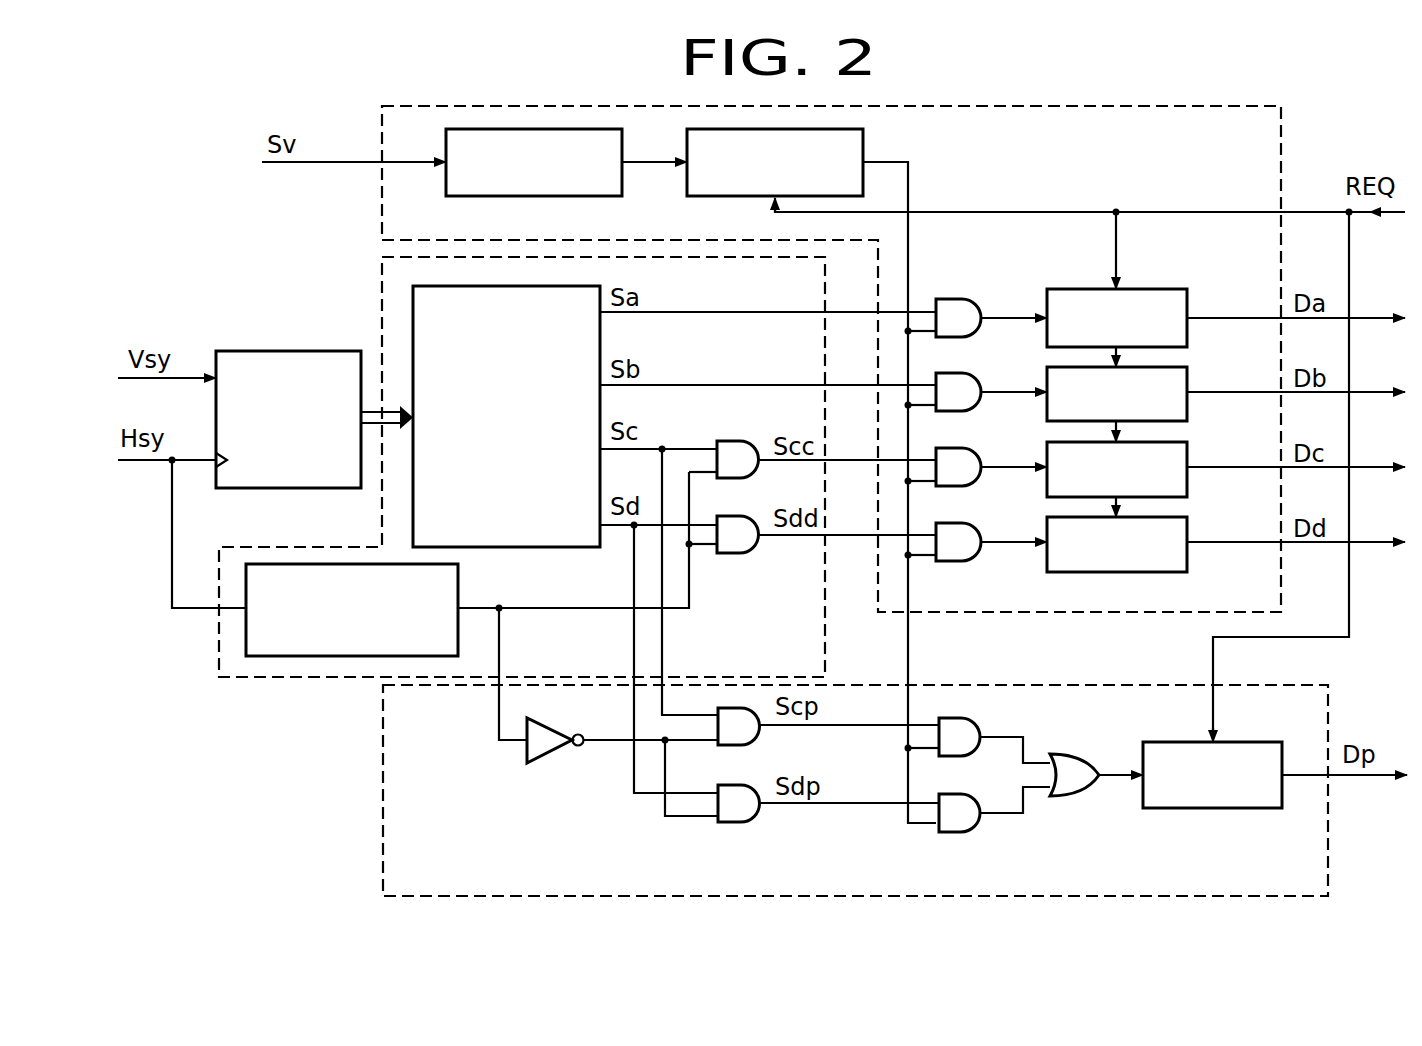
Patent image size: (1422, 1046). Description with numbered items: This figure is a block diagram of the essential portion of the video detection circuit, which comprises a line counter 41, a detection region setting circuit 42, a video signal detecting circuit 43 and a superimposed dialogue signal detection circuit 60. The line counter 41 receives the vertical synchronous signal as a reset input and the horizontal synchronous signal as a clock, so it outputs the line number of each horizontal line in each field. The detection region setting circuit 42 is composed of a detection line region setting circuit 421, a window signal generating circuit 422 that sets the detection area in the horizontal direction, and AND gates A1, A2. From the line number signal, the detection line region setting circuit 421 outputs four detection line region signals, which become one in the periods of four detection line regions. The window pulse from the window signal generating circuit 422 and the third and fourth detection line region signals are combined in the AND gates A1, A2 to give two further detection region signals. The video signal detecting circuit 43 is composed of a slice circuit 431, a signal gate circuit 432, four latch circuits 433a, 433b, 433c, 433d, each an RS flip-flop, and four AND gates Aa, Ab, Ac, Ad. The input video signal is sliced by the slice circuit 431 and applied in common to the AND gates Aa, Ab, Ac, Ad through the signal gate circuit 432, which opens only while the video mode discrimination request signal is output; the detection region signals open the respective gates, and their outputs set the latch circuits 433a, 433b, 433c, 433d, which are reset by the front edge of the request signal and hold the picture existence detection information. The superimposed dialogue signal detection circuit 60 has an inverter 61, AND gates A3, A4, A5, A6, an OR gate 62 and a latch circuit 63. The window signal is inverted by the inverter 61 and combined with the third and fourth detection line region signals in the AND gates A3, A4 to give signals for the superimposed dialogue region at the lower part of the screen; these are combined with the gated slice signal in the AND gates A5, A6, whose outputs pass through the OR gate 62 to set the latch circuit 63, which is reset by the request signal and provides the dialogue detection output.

The line counter 41 is at (302, 488).
The detection region setting circuit 42 is at (378, 293).
The video signal detecting circuit 43 is at (1281, 143).
The superimposed dialogue signal detection circuit 60 is at (381, 778).
The inverter 61 is at (548, 757).
The OR gate 62 is at (1083, 796).
The latch circuit 63 is at (1205, 808).
The detection line region setting circuit 421 is at (560, 547).
The window signal generating circuit 422 is at (458, 592).
The slice circuit 431 is at (500, 196).
The signal gate circuit 432 is at (735, 196).
The latch circuit 433a is at (1187, 296).
The latch circuit 433b is at (1187, 374).
The latch circuit 433c is at (1187, 449).
The latch circuit 433d is at (1187, 524).
The AND gate Aa is at (965, 337).
The AND gate Ab is at (965, 411).
The AND gate Ac is at (965, 486).
The AND gate Ad is at (965, 561).
The AND gate A1 is at (745, 441).
The AND gate A2 is at (745, 553).
The AND gate A3 is at (745, 745).
The AND gate A4 is at (745, 822).
The AND gate A5 is at (978, 718).
The AND gate A6 is at (968, 832).